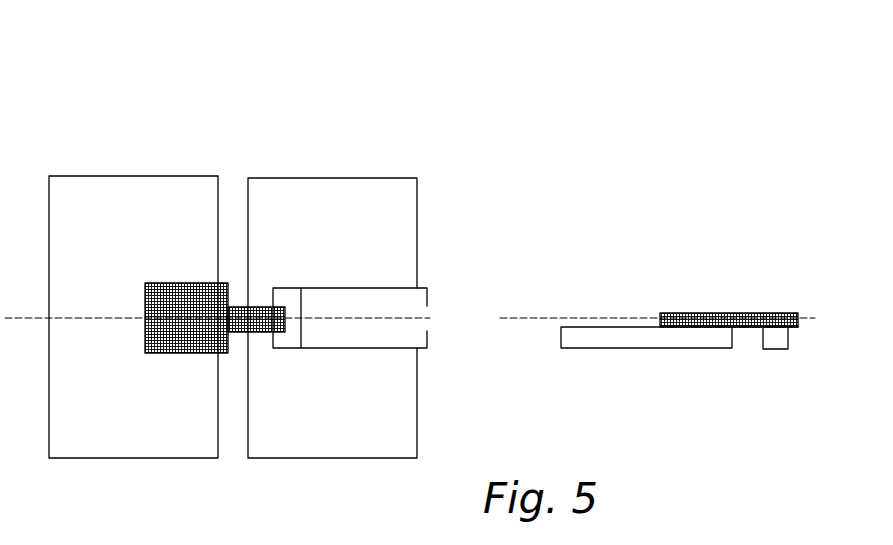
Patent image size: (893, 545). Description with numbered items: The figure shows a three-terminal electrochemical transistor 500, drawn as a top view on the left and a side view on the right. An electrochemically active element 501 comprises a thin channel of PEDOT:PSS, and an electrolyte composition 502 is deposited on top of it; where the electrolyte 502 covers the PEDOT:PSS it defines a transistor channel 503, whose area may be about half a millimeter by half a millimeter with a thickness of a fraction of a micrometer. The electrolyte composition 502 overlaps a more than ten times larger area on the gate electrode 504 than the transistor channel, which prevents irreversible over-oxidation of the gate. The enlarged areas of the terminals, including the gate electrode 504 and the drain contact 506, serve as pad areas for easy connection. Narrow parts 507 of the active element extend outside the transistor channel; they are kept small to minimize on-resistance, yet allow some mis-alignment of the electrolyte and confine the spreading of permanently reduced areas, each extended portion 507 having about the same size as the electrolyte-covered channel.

The three-terminal electrochemical transistor 500 is at (328, 97).
The electrochemically active element 501 is at (303, 318).
The electrolyte composition 502 is at (146, 335).
The transistor channel 503 is at (263, 334).
The gate electrode 504 is at (117, 196).
The drain contact 506 is at (328, 438).
The narrow parts of the electrochemically active element 507 is at (427, 295).